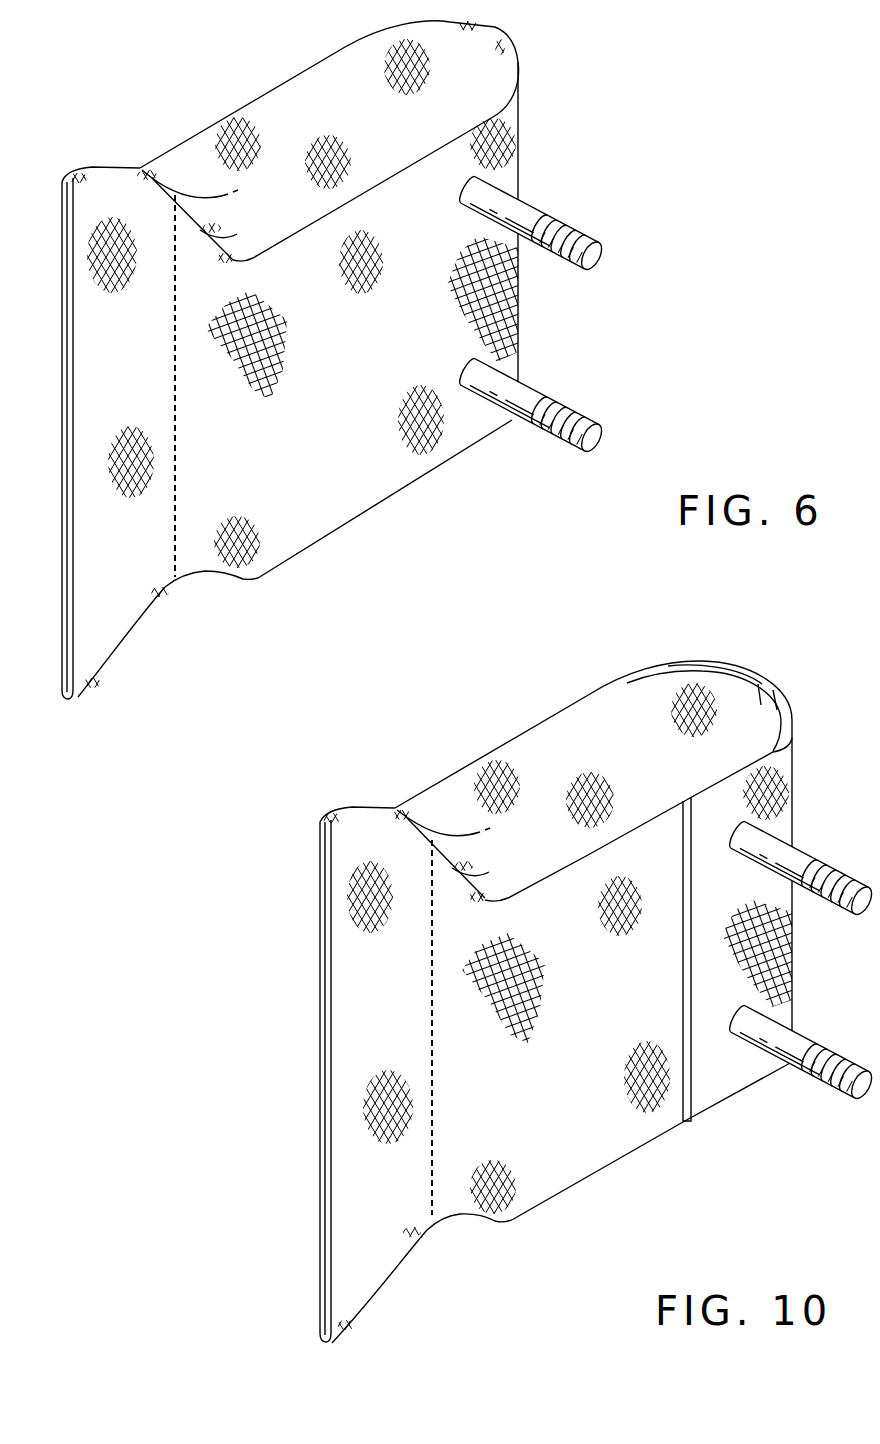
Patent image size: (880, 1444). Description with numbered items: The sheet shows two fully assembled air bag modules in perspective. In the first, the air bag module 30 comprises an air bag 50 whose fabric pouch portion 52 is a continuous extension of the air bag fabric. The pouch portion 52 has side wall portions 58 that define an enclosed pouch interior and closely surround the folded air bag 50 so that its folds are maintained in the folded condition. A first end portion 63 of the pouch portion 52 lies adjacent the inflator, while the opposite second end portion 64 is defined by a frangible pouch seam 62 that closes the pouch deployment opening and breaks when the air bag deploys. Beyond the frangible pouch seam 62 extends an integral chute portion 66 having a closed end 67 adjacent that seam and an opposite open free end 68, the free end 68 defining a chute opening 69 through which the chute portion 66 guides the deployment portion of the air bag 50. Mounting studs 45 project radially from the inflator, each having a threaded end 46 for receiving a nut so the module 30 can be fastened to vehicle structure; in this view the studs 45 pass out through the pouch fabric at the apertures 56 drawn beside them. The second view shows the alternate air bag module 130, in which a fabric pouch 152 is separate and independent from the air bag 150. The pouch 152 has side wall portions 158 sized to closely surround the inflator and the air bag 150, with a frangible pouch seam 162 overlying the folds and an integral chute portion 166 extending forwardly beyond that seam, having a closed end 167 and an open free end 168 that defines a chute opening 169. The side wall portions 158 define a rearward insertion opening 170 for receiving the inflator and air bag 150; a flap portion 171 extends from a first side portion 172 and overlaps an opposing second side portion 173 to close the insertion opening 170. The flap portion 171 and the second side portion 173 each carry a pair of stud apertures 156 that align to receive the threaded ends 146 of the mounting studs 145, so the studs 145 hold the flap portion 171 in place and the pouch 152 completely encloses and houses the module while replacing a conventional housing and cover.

In FIG. 6, the air bag module 30 is at (347, 395).
In FIG. 6, the air bag 50 is at (186, 139).
In FIG. 6, the pouch portion 52 is at (256, 97).
In FIG. 6, the side wall portions 58 is at (287, 98).
In FIG. 6, the first end portion 63 is at (511, 172).
In FIG. 6, the threaded end 46 is at (583, 231).
In FIG. 6, the mounting studs 45 is at (569, 314).
In FIG. 6, the reinforced attachment region 56 is at (477, 363).
In FIG. 6, the chute opening 69 is at (65, 655).
In FIG. 6, the open free end 68 is at (80, 698).
In FIG. 6, the closed end 67 is at (162, 563).
In FIG. 6, the chute portion 66 is at (119, 648).
In FIG. 6, the second end portion 64 is at (207, 562).
In FIG. 6, the frangible pouch seam 62 is at (177, 541).
In FIG. 10, the air bag module 130 is at (571, 968).
In FIG. 10, the air bag 150 is at (444, 779).
In FIG. 10, the fabric pouch 152 is at (516, 737).
In FIG. 10, the side wall portions 158 is at (545, 742).
In FIG. 10, the stud apertures 156 is at (745, 1006).
In FIG. 10, the mounting studs 145 is at (802, 988).
In FIG. 10, the threaded ends 146 is at (842, 889).
In FIG. 10, the frangible pouch seam 162 is at (435, 1185).
In FIG. 10, the chute portion 166 is at (380, 1258).
In FIG. 10, the closed end 167 is at (422, 1205).
In FIG. 10, the open free end 168 is at (353, 816).
In FIG. 10, the chute opening 169 is at (323, 1296).
In FIG. 10, the rearward insertion opening 170 is at (770, 700).
In FIG. 10, the flap portion 171 is at (773, 750).
In FIG. 10, the first side portion 172 is at (588, 697).
In FIG. 10, the second side portion 173 is at (660, 1118).